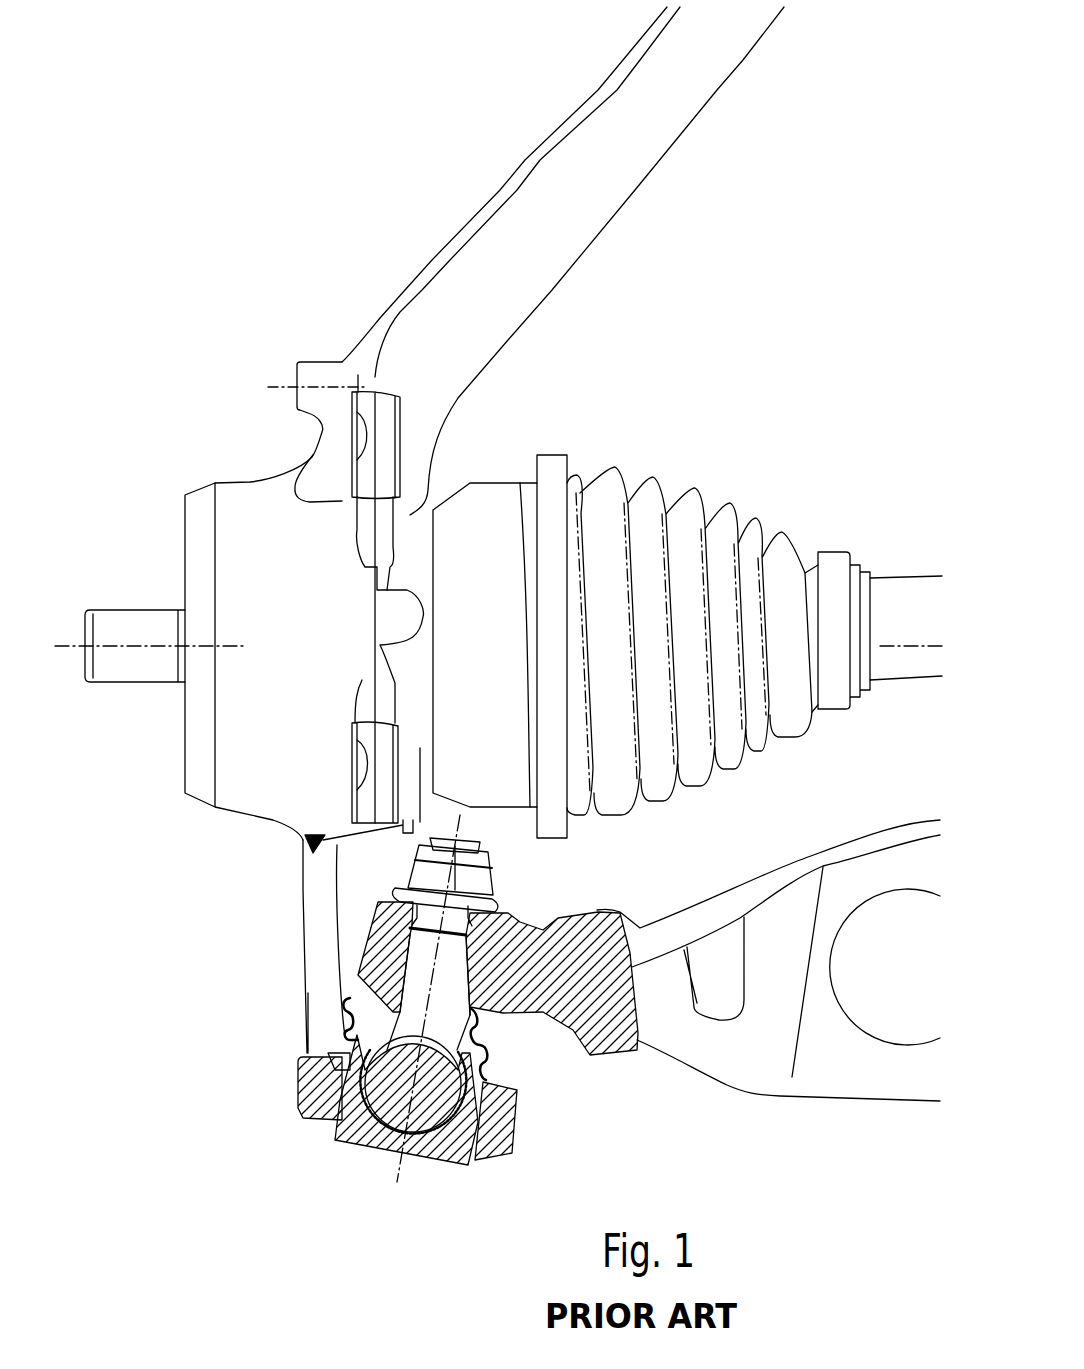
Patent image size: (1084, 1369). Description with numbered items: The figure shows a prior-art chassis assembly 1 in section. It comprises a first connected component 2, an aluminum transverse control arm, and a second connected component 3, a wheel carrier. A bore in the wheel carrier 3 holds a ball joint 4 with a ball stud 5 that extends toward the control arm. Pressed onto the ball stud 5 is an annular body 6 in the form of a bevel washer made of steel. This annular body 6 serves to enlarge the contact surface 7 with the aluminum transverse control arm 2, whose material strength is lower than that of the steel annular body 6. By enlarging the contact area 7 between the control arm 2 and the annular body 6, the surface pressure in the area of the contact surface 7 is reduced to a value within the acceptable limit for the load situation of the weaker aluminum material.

The chassis assembly 1 is at (227, 432).
The first connected component 2 is at (641, 1033).
The second connected component 3 is at (285, 1076).
The ball joint 4 is at (352, 1154).
The ball stud 5 is at (400, 943).
The annular body 6 is at (357, 980).
The contact surface 7 is at (510, 945).